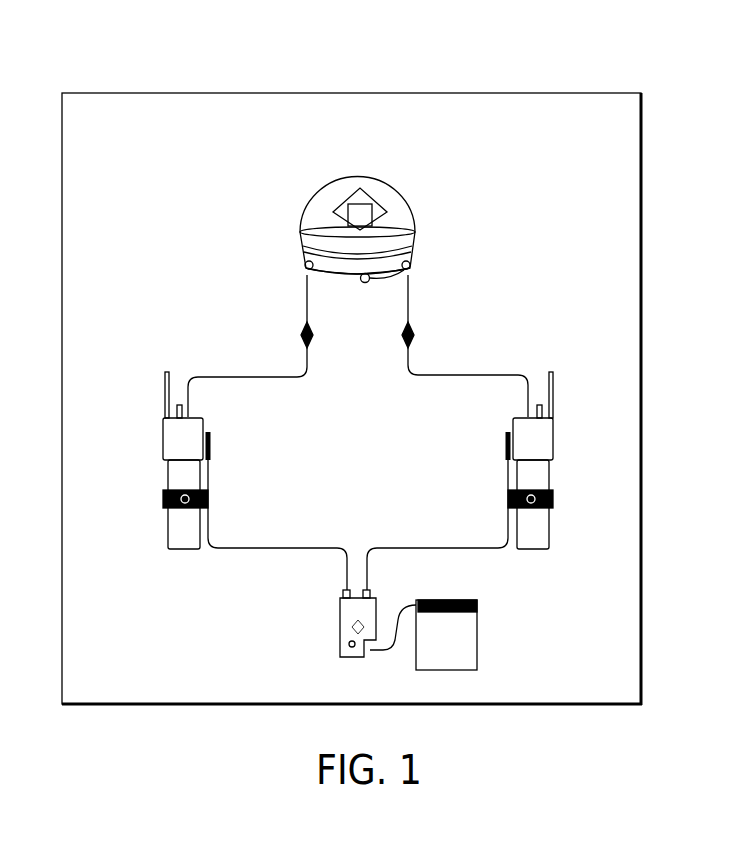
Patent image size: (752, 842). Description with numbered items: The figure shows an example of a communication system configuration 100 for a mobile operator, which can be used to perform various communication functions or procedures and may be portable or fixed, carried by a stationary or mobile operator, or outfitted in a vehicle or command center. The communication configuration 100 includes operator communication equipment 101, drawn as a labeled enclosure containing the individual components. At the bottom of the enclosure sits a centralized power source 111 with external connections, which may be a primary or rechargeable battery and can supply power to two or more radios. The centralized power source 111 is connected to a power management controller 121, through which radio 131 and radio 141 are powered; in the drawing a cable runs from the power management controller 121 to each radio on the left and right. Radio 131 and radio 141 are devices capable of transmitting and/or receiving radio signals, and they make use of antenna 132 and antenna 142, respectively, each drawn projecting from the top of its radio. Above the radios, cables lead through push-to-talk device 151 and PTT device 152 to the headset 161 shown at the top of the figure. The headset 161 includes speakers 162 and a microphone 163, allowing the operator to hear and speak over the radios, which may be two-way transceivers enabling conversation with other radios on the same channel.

The communication system configuration 100 is at (415, 40).
The operator communication equipment 101 is at (372, 157).
The centralized power source 111 is at (542, 644).
The power management controller 121 is at (338, 628).
The radio 131 is at (160, 440).
The antenna 132 is at (158, 390).
The radio 141 is at (620, 451).
The antenna 142 is at (560, 388).
The push-to-talk (PTT) device 151 is at (300, 336).
The PTT device 152 is at (413, 336).
The headset 161 is at (398, 200).
The speakers 162 is at (492, 245).
The microphone 163 is at (363, 289).